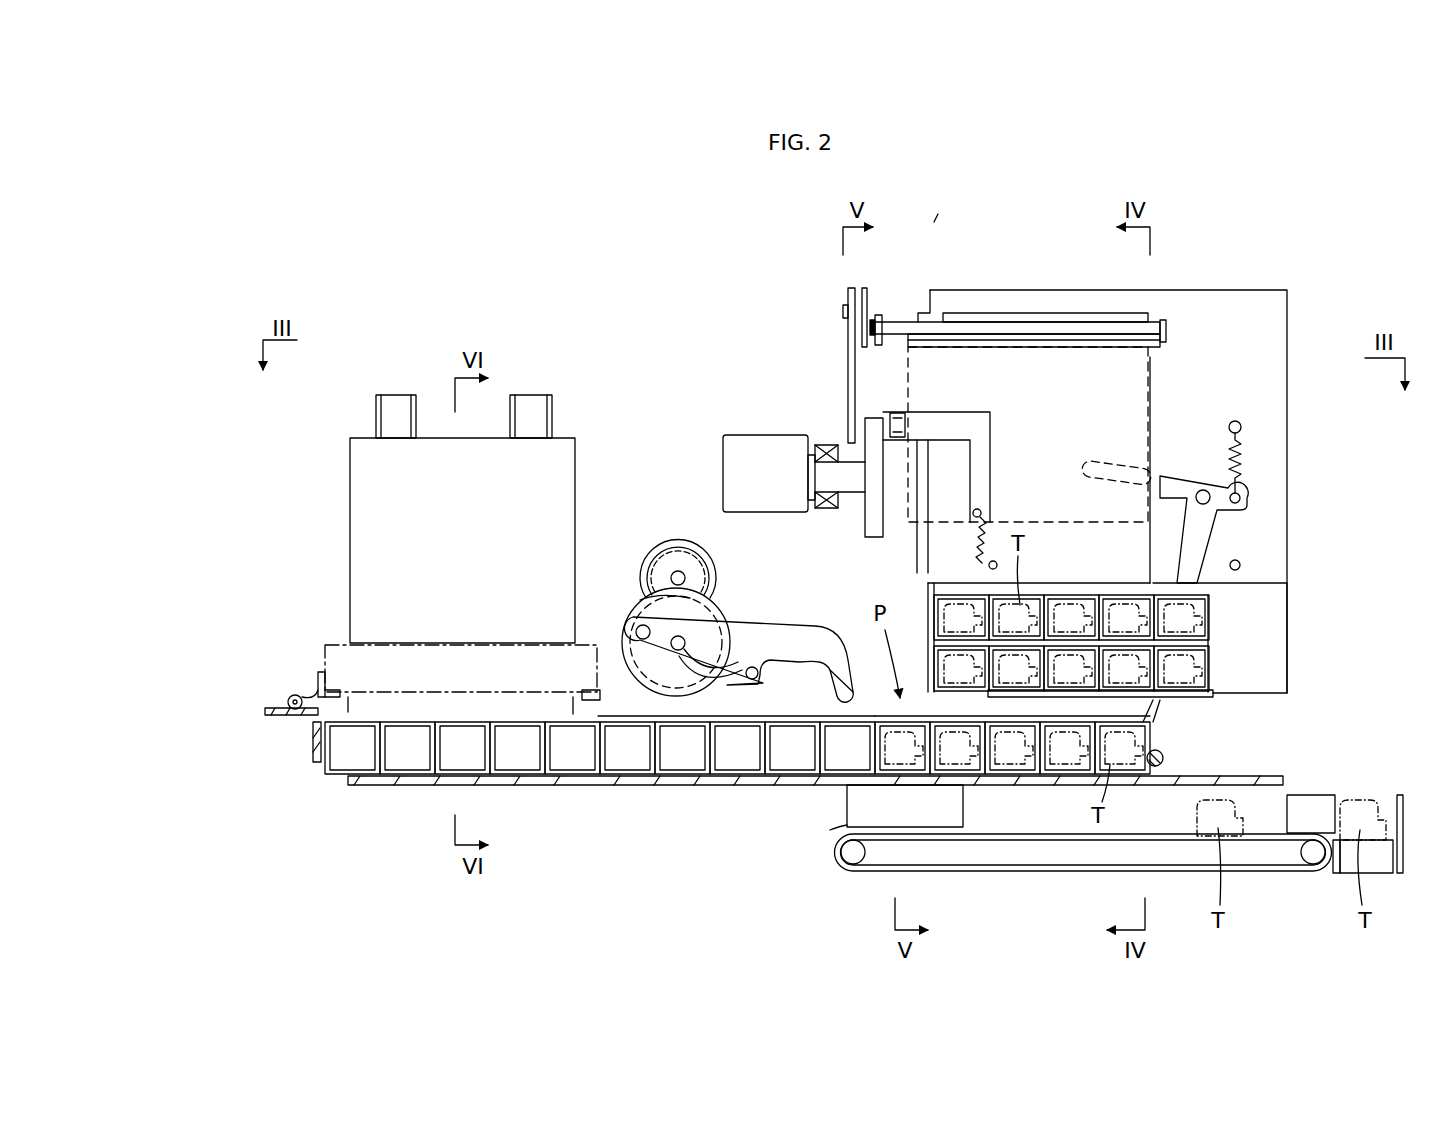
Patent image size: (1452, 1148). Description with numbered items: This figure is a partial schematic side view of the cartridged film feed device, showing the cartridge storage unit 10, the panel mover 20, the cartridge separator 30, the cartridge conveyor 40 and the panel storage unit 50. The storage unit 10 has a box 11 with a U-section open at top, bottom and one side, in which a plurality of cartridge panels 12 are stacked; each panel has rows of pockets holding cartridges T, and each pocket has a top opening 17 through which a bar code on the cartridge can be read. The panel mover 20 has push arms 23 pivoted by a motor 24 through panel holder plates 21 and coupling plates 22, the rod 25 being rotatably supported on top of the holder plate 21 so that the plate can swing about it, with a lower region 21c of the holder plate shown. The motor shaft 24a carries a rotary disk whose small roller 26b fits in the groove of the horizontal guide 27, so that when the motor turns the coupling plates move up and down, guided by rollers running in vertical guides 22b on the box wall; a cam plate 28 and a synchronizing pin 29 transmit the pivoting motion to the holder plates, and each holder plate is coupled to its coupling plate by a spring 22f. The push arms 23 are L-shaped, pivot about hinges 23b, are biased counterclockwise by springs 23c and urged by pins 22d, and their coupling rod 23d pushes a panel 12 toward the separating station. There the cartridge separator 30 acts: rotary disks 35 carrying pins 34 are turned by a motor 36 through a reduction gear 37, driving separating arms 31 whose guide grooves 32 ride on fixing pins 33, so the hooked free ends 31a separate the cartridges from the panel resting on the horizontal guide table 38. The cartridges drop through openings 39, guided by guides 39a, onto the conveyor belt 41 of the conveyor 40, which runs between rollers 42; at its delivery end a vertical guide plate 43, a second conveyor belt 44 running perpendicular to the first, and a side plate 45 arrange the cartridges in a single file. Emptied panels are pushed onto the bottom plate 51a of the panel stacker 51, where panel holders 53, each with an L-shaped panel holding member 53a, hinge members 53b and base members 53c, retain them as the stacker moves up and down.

The cartridge storage unit 10 is at (1243, 280).
The box 11 is at (1287, 312).
The cartridge panel 12 is at (450, 716).
The top opening 17 is at (1007, 786).
The panel mover 20 is at (797, 385).
The panel holder plate 21 is at (1160, 383).
The housing bottom 21c is at (1060, 350).
The coupling plate 22 is at (1020, 320).
The vertical guide 22b is at (925, 467).
The pin 22d is at (1130, 497).
The spring 22f is at (1005, 525).
The push arm 23 is at (1195, 537).
The hinge 23b is at (1203, 490).
The spring 23c is at (1245, 465).
The coupling rod 23d is at (1165, 758).
The motor 24 is at (727, 435).
The motor shaft 24a is at (850, 487).
The rod 25 is at (1072, 330).
The small roller 26b is at (905, 422).
The horizontal guide 27 is at (920, 455).
The cam plate 28 is at (848, 355).
The synchronizing pin 29 is at (843, 312).
The cartridge separator 30 is at (652, 520).
The separating arm 31 is at (787, 633).
The free end 31a is at (835, 688).
The guide groove 32 is at (738, 650).
The fixing pin 33 is at (752, 680).
The pin 34 is at (640, 600).
The rotary disk 35 is at (640, 632).
The motor 36 is at (688, 537).
The reduction gear 37 is at (638, 590).
The horizontal guide table 38 is at (635, 785).
The opening 39 is at (935, 790).
The guide 39a is at (848, 825).
The cartridge conveyor 40 is at (1335, 775).
The conveyor belt 41 is at (1058, 835).
The roller 42 is at (855, 855).
The vertical guide plate 43 is at (1305, 808).
The second conveyor belt 44 is at (1385, 865).
The side plate 45 is at (1400, 800).
The panel storage unit 50 is at (405, 366).
The panel stacker 51 is at (360, 468).
The bottom plate 51a is at (375, 780).
The panel holder 53 is at (300, 676).
The panel holding member 53a is at (325, 660).
The hinge member 53b is at (290, 693).
The base member 53c is at (318, 740).